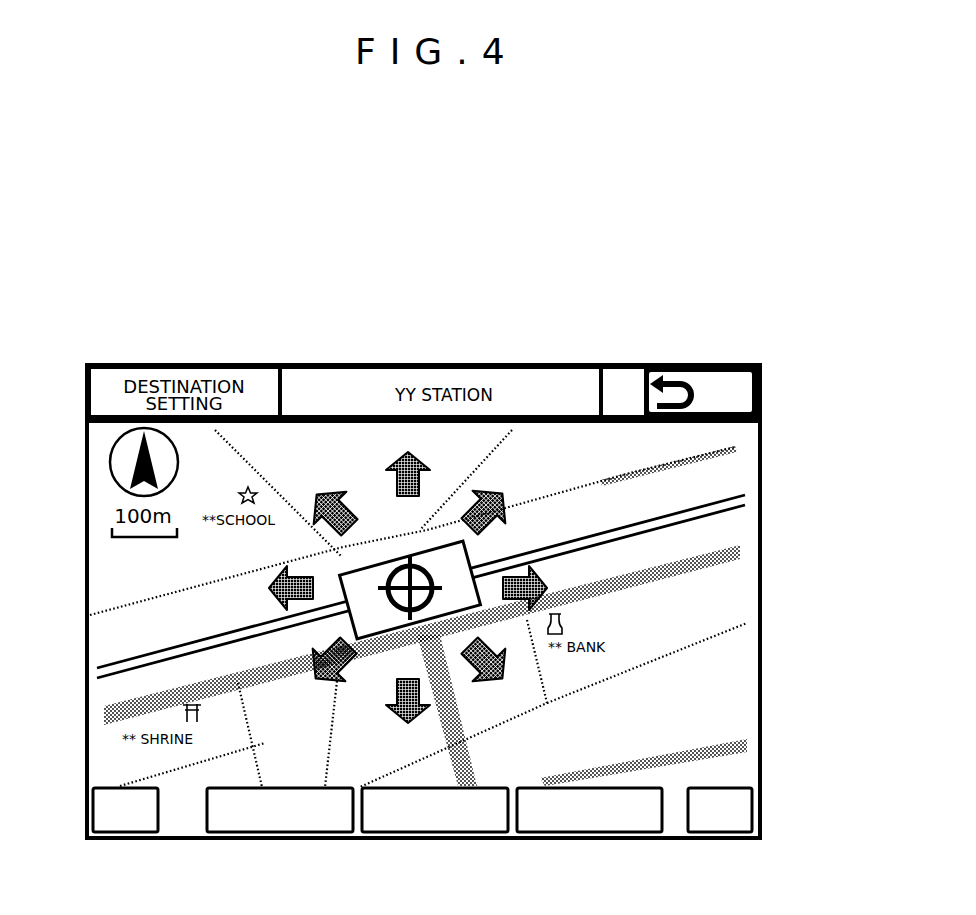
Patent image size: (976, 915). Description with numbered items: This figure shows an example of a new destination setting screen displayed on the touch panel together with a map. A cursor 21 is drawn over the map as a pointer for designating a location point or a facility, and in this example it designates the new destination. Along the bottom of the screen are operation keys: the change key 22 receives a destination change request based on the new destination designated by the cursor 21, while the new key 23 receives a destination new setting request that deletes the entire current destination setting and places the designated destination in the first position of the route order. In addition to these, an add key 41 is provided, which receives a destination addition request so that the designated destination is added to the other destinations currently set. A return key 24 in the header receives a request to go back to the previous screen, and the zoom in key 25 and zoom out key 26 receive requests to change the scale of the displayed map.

The cursor 21 is at (415, 590).
The change key 22 is at (643, 793).
The new key 23 is at (483, 797).
The return key 24 is at (753, 382).
The zoom in key 25 is at (100, 793).
The zoom out key 26 is at (750, 793).
The add key 41 is at (325, 822).